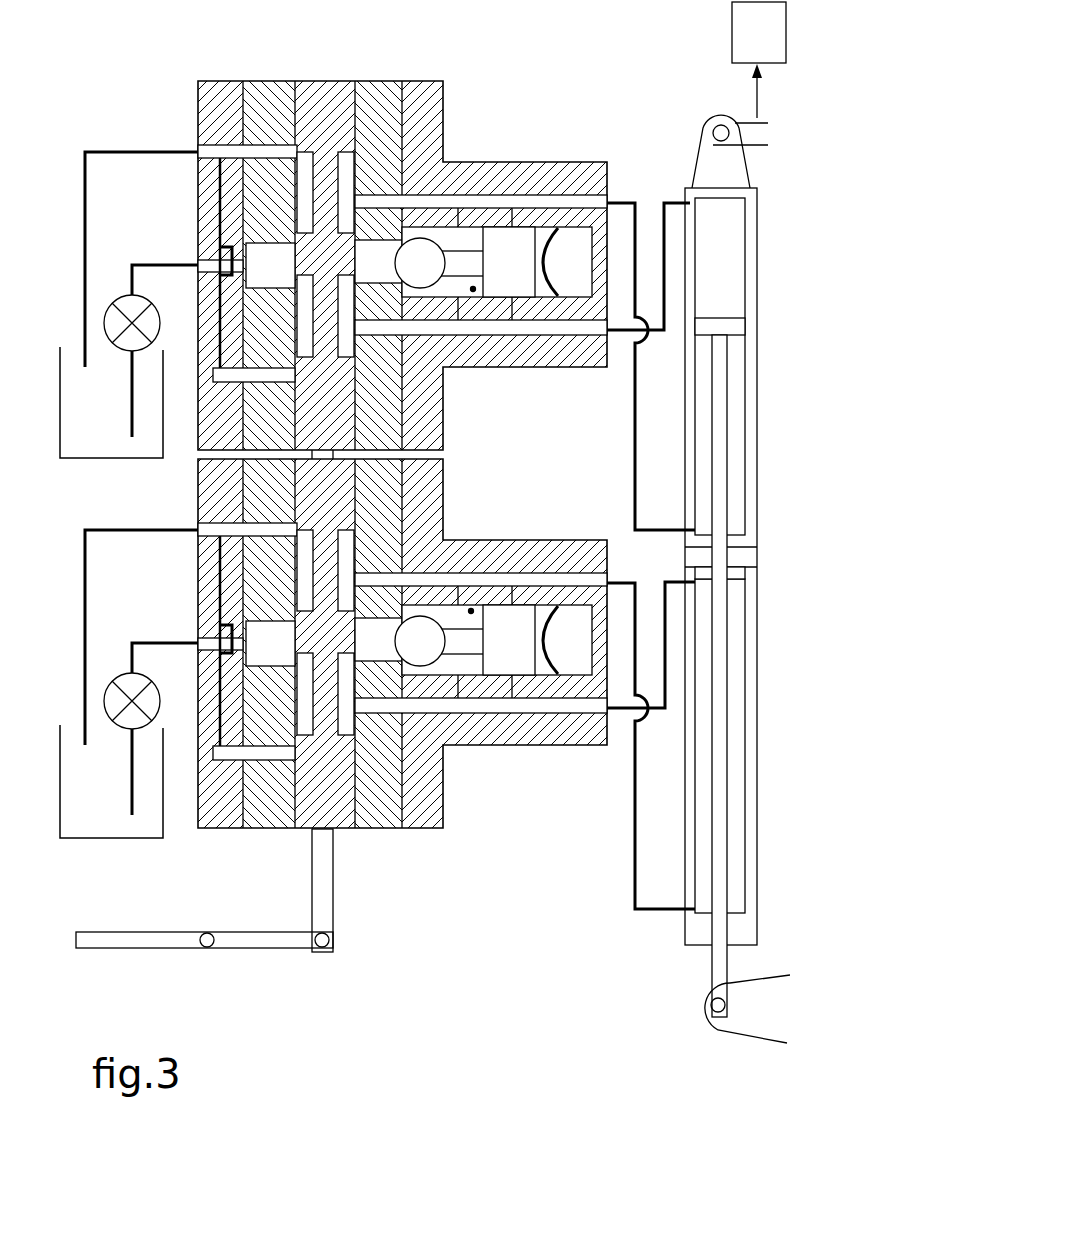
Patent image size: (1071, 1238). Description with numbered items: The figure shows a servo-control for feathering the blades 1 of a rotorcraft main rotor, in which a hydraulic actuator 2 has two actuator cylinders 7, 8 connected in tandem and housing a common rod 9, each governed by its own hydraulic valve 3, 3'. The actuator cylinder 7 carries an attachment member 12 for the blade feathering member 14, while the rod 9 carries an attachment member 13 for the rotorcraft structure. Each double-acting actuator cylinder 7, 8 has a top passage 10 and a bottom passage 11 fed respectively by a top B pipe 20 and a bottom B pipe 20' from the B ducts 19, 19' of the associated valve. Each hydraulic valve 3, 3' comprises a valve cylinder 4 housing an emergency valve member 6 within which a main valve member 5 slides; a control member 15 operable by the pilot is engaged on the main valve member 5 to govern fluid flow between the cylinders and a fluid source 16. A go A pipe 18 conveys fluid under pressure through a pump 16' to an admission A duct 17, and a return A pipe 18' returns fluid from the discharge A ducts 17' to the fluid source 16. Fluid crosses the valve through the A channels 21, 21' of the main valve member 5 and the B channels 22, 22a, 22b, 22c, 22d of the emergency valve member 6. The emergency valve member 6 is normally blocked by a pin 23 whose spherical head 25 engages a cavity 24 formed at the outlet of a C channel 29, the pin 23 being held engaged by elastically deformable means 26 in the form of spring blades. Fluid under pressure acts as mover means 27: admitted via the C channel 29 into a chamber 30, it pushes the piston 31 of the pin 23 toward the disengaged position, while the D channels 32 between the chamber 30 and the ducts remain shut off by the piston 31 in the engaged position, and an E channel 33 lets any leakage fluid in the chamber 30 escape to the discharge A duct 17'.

The blades 1 is at (765, 46).
The hydraulic actuator 2 is at (668, 92).
The hydraulic valve 3 is at (354, 227).
The hydraulic valve 3' is at (402, 737).
The valve cylinder 4 is at (420, 80).
The main valve member 5 is at (343, 80).
The emergency valve member 6 is at (268, 140).
The actuator cylinder 7 is at (685, 425).
The actuator cylinder 8 is at (685, 830).
The rod 9 is at (712, 975).
The top passage 10 is at (698, 208).
The bottom passage 11 is at (695, 525).
The attachment member 12 is at (735, 186).
The attachment member 13 is at (773, 1012).
The blade feathering member 14 is at (757, 110).
The control member 15 is at (130, 932).
The fluid source 16 is at (111, 592).
The pump 16' is at (131, 481).
The admission A duct 17 is at (201, 452).
The discharge A duct 17' is at (195, 454).
The go A pipe 18 is at (179, 505).
The return A pipe 18' is at (178, 422).
The B duct 19 is at (525, 474).
The B duct 19' is at (568, 332).
The top B pipe 20 is at (651, 460).
The bottom B pipe 20' is at (636, 556).
The A channel 21 is at (257, 329).
The A channel 21' is at (390, 551).
The B channel 22 is at (280, 280).
The B channel 22a is at (258, 142).
The B channel 22b is at (262, 350).
The B channel 22c is at (388, 190).
The B channel 22d is at (450, 365).
The pin 23 is at (513, 322).
The cavity 24 is at (400, 255).
The head 25 is at (432, 274).
The elastically deformable means 26 is at (550, 237).
The mover means 27 is at (384, 465).
The C channel 29 is at (440, 200).
The chamber 30 is at (475, 292).
The piston 31 is at (521, 274).
The D channels 32 is at (513, 212).
The E channel 33 is at (460, 212).